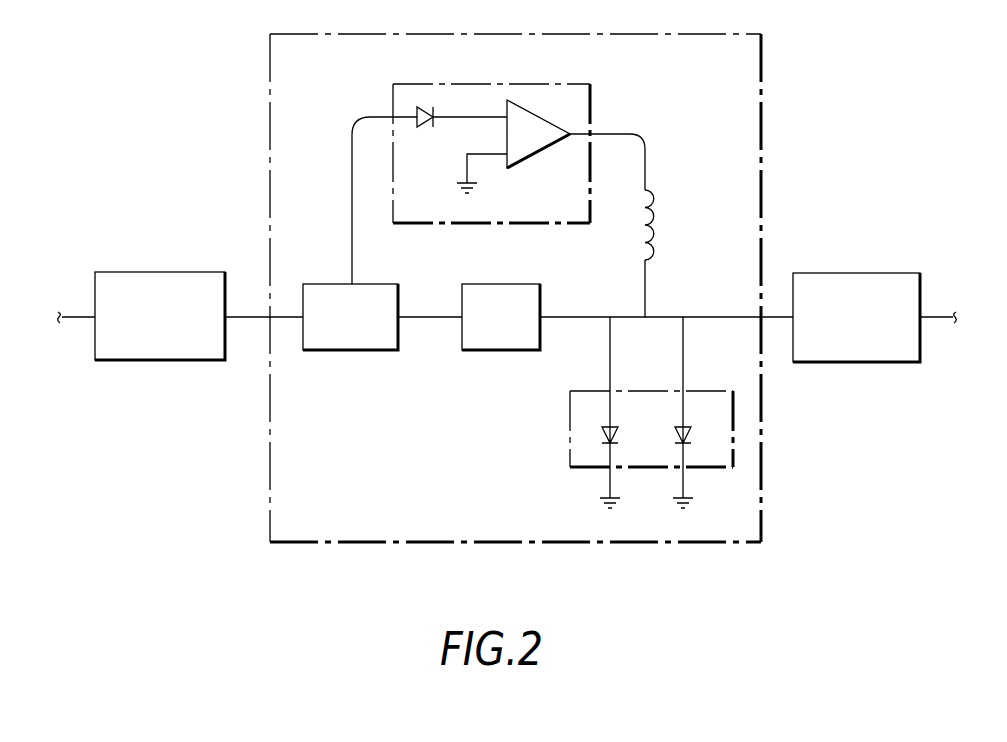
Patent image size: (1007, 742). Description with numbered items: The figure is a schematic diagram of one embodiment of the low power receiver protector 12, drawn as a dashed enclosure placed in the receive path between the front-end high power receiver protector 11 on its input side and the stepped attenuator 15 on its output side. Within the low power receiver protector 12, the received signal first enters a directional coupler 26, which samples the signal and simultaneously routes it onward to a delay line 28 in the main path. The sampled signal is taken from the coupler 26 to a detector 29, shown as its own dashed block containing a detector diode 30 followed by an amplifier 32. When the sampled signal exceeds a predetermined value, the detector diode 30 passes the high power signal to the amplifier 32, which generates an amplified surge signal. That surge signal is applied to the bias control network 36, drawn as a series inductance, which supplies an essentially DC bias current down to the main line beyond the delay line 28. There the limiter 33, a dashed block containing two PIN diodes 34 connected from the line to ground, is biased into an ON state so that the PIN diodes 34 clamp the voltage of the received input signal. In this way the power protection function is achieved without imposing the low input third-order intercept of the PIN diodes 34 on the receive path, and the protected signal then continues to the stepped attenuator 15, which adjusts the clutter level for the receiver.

The high power receiver protector 11 is at (137, 272).
The low power receiver protector 12 is at (270, 456).
The stepped attenuator 15 is at (851, 273).
The directional coupler 26 is at (357, 351).
The delay line 28 is at (500, 351).
The detector 29 is at (488, 84).
The detector diode 30 is at (421, 126).
The amplifier 32 is at (549, 154).
The limiter 33 is at (570, 450).
The PIN diode 34 is at (614, 428).
The bias control network 36 is at (656, 218).